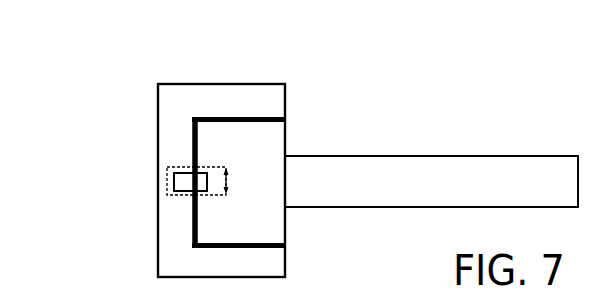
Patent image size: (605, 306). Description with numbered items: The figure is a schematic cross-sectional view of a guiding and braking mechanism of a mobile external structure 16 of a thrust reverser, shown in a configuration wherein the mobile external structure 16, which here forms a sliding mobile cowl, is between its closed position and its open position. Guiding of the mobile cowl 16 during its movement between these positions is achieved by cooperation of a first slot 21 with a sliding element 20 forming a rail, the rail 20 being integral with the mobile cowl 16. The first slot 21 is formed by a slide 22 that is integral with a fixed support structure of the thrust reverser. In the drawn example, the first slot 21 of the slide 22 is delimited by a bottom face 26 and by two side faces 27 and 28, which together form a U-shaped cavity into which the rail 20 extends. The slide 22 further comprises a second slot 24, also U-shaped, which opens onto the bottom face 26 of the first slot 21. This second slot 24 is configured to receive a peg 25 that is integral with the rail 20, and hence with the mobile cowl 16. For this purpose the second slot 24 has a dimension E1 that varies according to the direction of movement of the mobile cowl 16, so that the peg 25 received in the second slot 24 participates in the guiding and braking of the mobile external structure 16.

The mobile external structure 16 is at (441, 163).
The sliding element 20 is at (272, 142).
The first slot 21 is at (63, 112).
The slide 22 is at (213, 84).
The second slot 24 is at (184, 195).
The peg 25 is at (181, 182).
The bottom face 26 is at (200, 135).
The side face 27 is at (232, 121).
The side face 28 is at (222, 243).
The dimension E1 is at (239, 181).